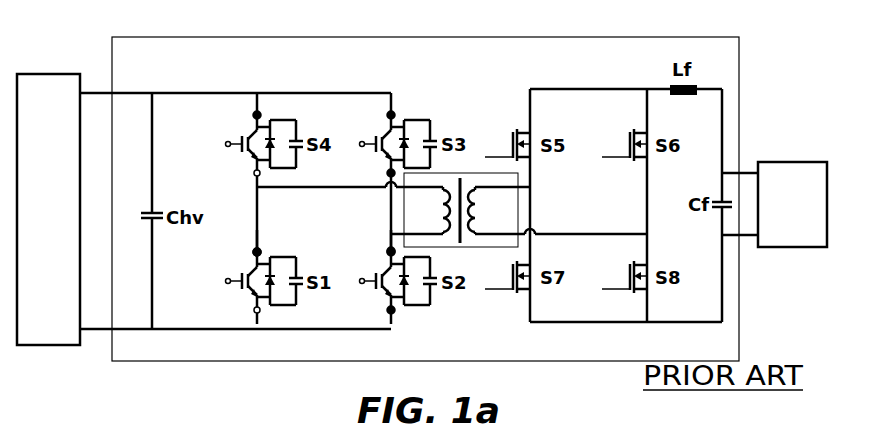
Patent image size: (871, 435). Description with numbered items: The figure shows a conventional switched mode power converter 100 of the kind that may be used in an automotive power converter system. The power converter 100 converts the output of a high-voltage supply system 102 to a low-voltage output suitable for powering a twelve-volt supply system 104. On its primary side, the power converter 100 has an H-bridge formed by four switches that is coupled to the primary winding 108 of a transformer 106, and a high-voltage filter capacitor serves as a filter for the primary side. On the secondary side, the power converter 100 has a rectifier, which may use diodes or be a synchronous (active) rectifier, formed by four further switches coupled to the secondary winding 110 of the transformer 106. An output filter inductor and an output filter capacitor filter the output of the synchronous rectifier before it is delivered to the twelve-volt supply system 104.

The switched mode power converter 100 is at (403, 36).
The high-voltage supply system 102 is at (70, 73).
The 12 V supply system 104 is at (808, 161).
The transformer 106 is at (463, 248).
The primary winding 108 is at (442, 200).
The secondary winding 110 is at (476, 199).